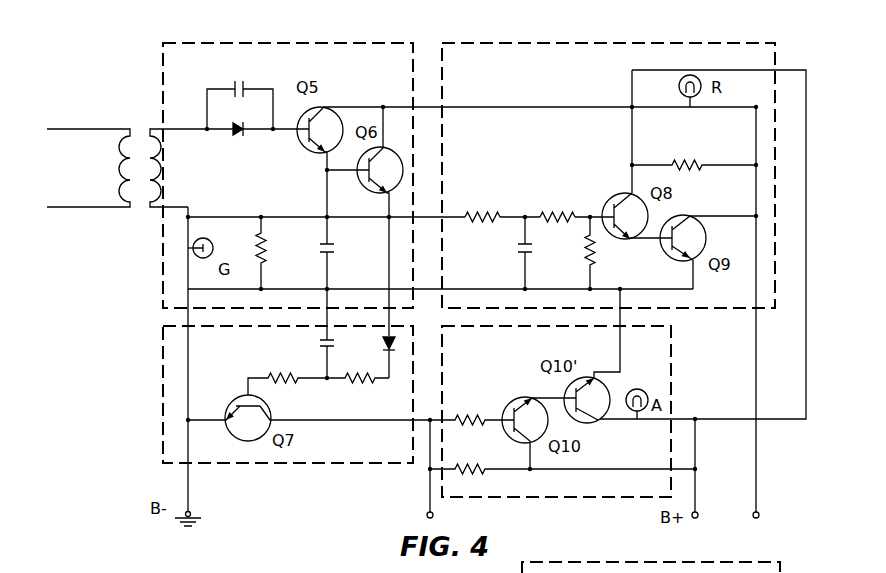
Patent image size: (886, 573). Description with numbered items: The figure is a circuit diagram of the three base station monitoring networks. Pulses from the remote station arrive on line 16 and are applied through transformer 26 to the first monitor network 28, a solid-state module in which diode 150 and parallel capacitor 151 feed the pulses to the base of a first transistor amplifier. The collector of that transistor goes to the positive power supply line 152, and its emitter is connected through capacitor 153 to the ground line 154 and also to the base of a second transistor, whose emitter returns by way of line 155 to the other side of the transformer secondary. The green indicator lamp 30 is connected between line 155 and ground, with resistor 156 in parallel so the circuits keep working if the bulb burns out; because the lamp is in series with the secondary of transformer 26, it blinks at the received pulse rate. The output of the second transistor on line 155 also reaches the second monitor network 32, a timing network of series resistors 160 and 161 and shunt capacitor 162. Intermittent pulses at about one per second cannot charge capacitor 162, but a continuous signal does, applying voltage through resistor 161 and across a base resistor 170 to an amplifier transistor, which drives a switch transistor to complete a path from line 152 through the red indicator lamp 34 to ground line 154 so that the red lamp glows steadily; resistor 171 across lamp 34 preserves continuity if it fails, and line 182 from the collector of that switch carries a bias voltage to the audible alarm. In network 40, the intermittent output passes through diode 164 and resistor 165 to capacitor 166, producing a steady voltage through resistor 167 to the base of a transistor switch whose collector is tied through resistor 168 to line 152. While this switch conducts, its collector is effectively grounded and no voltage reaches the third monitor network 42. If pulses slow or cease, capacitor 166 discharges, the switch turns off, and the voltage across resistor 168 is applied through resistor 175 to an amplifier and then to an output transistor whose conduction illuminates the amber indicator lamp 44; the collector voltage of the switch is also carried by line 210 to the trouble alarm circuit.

The line 16 is at (67, 129).
The transformer 26 is at (139, 130).
The first monitor network 28 is at (298, 41).
The second monitor network 32 is at (620, 41).
The transistor switch network 40 is at (160, 371).
The third monitor network 42 is at (676, 361).
The diode 150 is at (239, 137).
The capacitor 151 is at (239, 81).
The positive power supply line 152 is at (352, 107).
The capacitor 153 is at (336, 250).
The negative supply or ground line 154 is at (294, 289).
The line 155 is at (292, 216).
The resistor 156 is at (266, 250).
The green indicator lamp 30 is at (213, 248).
The red indicator lamp 34 is at (679, 88).
The amber indicator lamp 44 is at (637, 389).
The resistor 160 is at (478, 212).
The resistor 161 is at (553, 212).
The shunt capacitor 162 is at (516, 250).
The diode 164 is at (382, 345).
The resistor 165 is at (356, 387).
The capacitor 166 is at (318, 345).
The resistor 167 is at (281, 387).
The resistor 168 is at (478, 478).
The resistor 170 is at (595, 262).
The resistor 171 is at (688, 163).
The resistor 175 is at (470, 406).
The line 182 is at (757, 486).
The line 210 is at (428, 489).